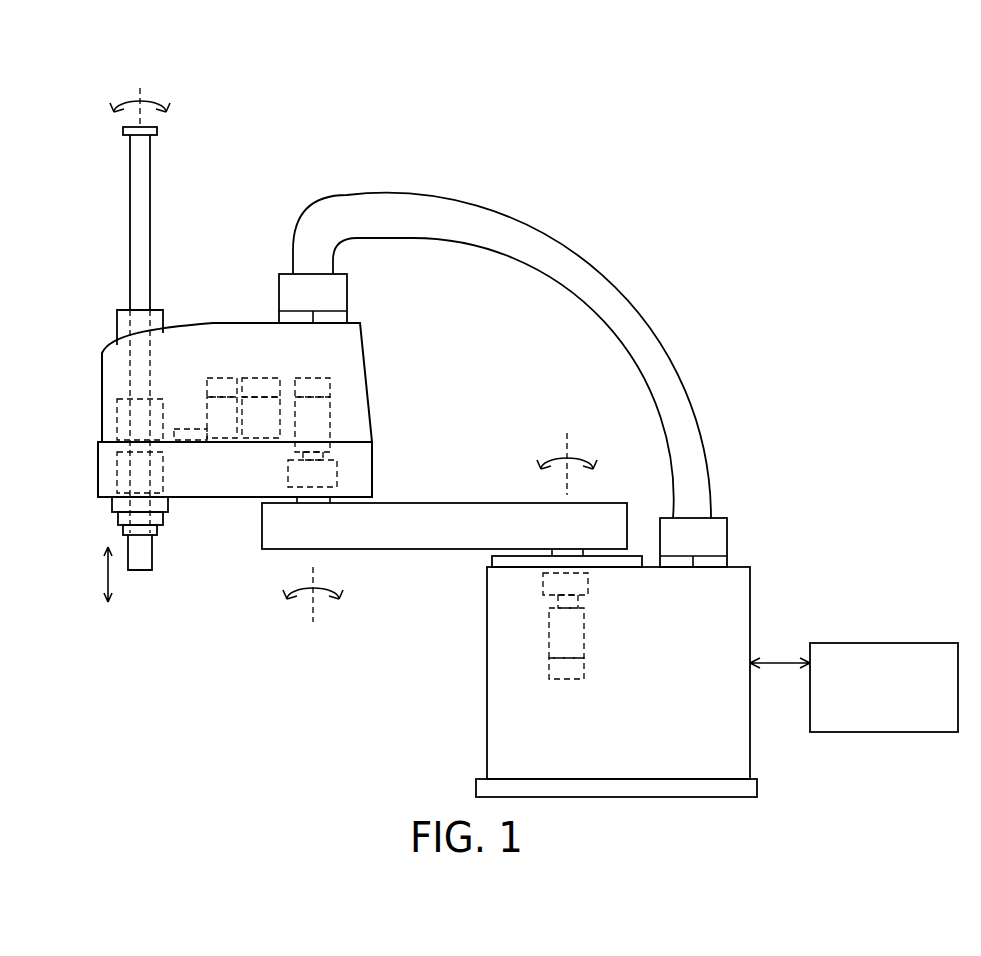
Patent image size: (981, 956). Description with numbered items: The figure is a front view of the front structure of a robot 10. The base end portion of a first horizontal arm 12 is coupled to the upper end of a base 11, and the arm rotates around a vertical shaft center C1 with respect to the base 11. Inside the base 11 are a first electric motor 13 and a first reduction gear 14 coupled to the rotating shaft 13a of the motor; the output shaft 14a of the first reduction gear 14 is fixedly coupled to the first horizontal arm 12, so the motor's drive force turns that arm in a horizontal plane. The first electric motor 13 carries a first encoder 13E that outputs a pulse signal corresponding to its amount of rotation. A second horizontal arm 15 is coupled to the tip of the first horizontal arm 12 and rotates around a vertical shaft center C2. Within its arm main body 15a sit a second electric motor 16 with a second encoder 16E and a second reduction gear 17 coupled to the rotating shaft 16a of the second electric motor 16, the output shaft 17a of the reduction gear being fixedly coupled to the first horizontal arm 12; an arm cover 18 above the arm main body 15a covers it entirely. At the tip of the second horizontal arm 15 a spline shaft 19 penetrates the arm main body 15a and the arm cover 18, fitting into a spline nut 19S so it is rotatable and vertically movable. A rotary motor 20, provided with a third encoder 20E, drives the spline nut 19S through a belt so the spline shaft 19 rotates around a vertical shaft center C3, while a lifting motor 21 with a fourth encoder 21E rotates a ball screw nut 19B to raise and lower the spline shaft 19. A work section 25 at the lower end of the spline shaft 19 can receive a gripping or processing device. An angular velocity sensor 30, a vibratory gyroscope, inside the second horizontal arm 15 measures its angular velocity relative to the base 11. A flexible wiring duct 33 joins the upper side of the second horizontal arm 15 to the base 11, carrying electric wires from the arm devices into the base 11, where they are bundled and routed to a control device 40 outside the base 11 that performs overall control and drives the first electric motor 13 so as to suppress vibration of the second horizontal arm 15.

The robot 10 is at (652, 131).
The base 11 is at (488, 715).
The first horizontal arm 12 is at (610, 503).
The first electric motor 13 is at (586, 643).
The rotating shaft 13a is at (580, 603).
The first encoder 13E is at (586, 668).
The first reduction gear 14 is at (591, 583).
The output shaft 14a is at (529, 563).
The second horizontal arm 15 is at (237, 510).
The arm main body 15a is at (194, 498).
The second electric motor 16 is at (331, 409).
The rotating shaft 16a is at (324, 457).
The second encoder 16E is at (320, 376).
The second reduction gear 17 is at (338, 472).
The output shaft 17a is at (331, 502).
The arm cover 18 is at (366, 353).
The spline shaft 19 is at (130, 218).
The spline nut 19S is at (117, 420).
The ball screw nut 19B is at (117, 473).
The rotary motor 20 is at (222, 440).
The third encoder 20E is at (213, 376).
The lifting motor 21 is at (261, 440).
The fourth encoder 21E is at (263, 376).
The work section 25 is at (153, 561).
The angular velocity sensor 30 is at (188, 441).
The wiring duct 33 is at (666, 349).
The control device 40 is at (932, 643).
The shaft center C1 is at (567, 448).
The shaft center C2 is at (313, 611).
The shaft center C3 is at (140, 91).